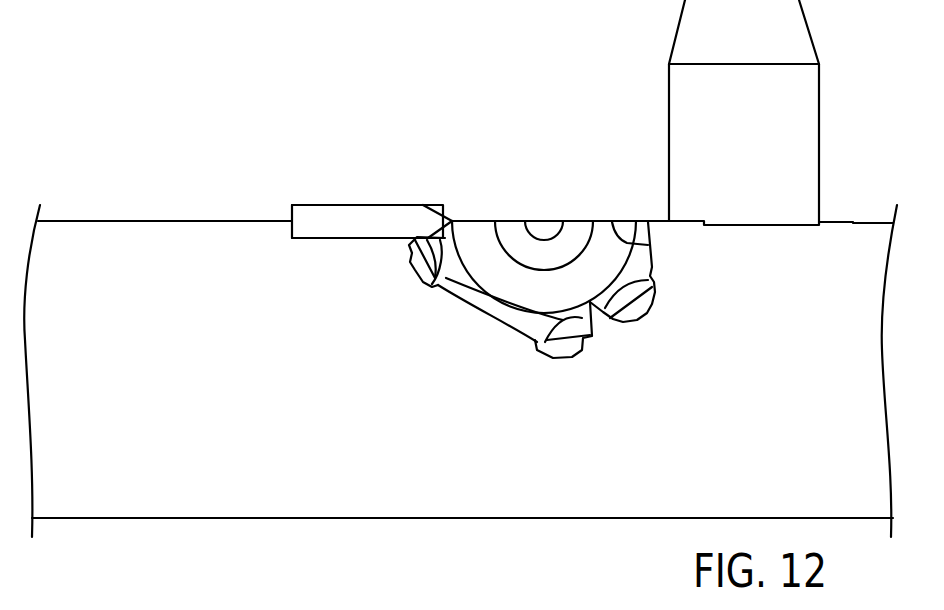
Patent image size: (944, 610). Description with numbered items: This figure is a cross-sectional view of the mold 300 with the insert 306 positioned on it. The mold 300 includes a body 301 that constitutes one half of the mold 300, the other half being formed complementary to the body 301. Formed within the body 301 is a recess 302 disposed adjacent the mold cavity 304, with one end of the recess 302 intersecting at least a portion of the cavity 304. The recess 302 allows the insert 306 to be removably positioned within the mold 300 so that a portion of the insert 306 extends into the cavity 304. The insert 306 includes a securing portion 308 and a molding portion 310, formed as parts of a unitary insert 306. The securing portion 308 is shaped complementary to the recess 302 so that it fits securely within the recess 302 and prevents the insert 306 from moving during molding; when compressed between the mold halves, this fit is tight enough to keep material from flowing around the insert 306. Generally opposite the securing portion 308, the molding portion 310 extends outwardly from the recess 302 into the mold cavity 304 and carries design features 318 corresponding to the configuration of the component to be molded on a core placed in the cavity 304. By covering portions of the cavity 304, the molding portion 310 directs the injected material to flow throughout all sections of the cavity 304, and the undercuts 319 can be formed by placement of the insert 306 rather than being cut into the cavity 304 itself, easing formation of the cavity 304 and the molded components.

The mold 300 is at (170, 196).
The body 301 is at (108, 220).
The recess 302 is at (292, 230).
The mold cavity 304 is at (611, 222).
The insert 306 is at (368, 184).
The securing portion 308 is at (292, 206).
The molding portion 310 is at (422, 207).
The design features 318 is at (453, 220).
The undercuts 319 is at (412, 263).